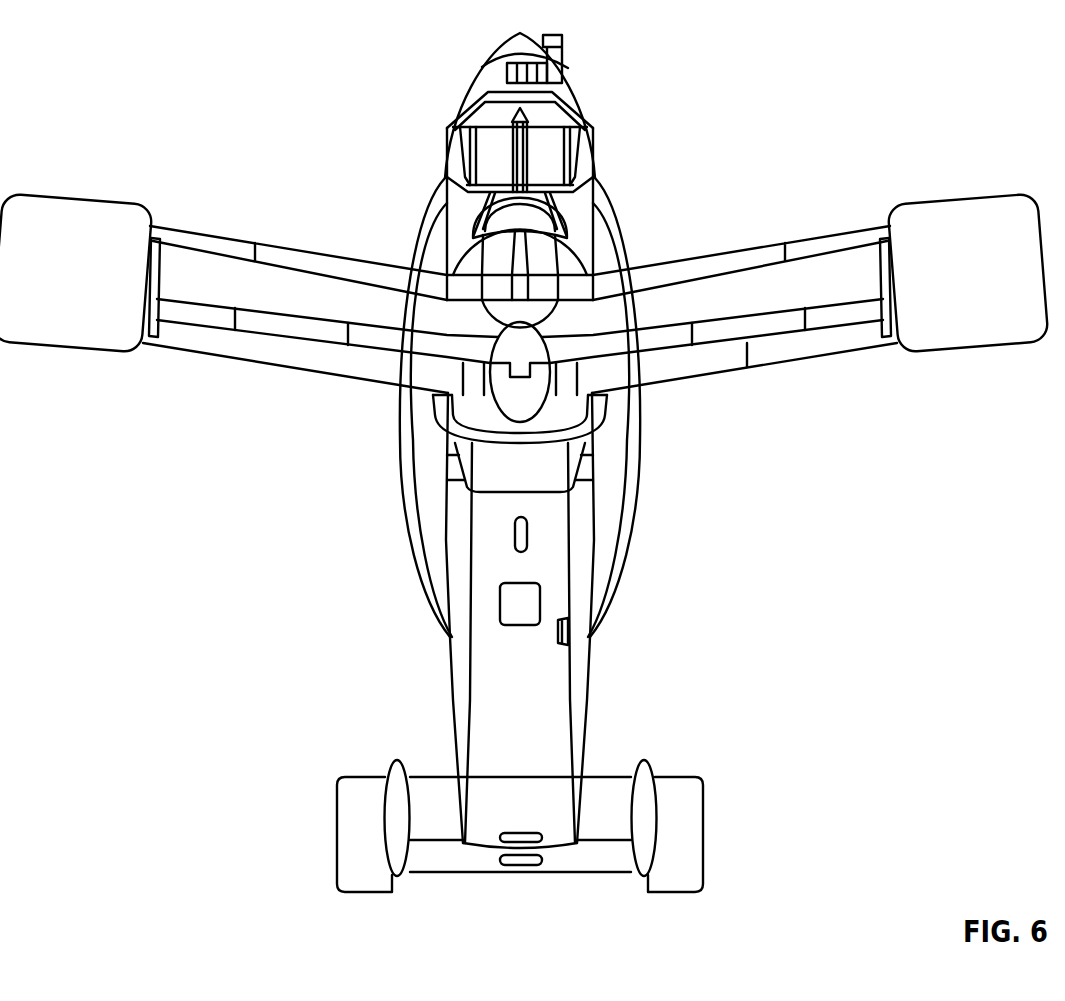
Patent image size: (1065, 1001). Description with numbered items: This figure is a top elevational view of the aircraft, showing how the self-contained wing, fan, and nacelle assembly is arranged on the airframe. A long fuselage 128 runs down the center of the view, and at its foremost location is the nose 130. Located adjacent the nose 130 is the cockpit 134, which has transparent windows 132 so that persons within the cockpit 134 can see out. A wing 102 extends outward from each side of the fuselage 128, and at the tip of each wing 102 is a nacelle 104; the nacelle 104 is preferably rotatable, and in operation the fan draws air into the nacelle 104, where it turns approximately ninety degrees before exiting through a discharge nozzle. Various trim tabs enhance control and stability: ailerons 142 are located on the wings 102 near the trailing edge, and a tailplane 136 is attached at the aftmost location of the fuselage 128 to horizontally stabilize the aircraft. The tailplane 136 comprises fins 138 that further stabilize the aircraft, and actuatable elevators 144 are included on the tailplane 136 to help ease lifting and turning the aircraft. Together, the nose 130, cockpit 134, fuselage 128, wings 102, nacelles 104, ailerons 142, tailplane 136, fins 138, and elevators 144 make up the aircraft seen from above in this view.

The wing 102 is at (273, 325).
The nacelle 104 is at (95, 291).
The fuselage 128 is at (533, 536).
The nose 130 is at (500, 55).
The transparent windows 132 is at (488, 164).
The cockpit 134 is at (610, 191).
The tailplane 136 is at (610, 787).
The fins 138 is at (392, 818).
The ailerons 142 is at (347, 368).
The elevators 144 is at (443, 862).